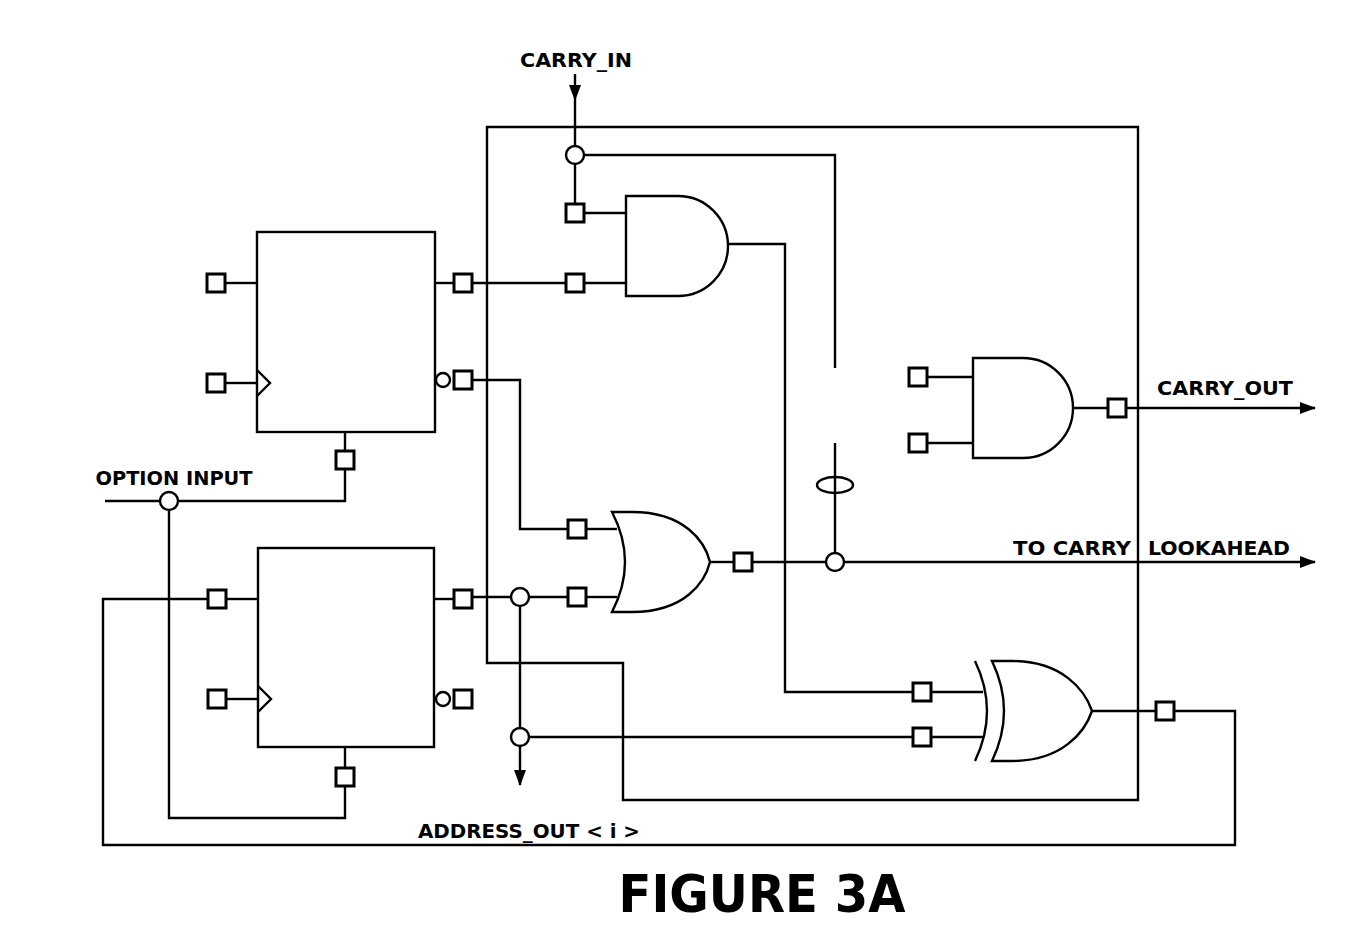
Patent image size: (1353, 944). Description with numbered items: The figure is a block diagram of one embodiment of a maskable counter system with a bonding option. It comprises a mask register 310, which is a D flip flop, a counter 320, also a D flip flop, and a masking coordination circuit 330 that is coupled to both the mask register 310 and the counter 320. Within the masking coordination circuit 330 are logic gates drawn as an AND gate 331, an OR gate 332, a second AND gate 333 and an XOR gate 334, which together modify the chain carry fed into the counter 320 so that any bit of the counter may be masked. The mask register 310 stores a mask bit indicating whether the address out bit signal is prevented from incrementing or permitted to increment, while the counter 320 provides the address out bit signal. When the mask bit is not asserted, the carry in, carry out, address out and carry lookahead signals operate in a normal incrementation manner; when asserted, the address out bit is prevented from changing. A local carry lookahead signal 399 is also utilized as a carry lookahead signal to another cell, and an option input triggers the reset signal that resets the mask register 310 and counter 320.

The masking coordination circuit 330 is at (1065, 156).
The mask register 310 is at (328, 357).
The counter 320 is at (328, 672).
The AND gate 331 is at (650, 258).
The OR gate 332 is at (645, 576).
The AND gate 333 is at (993, 421).
The XOR gate 334 is at (1025, 727).
The local carry lookahead signal 399 is at (851, 490).